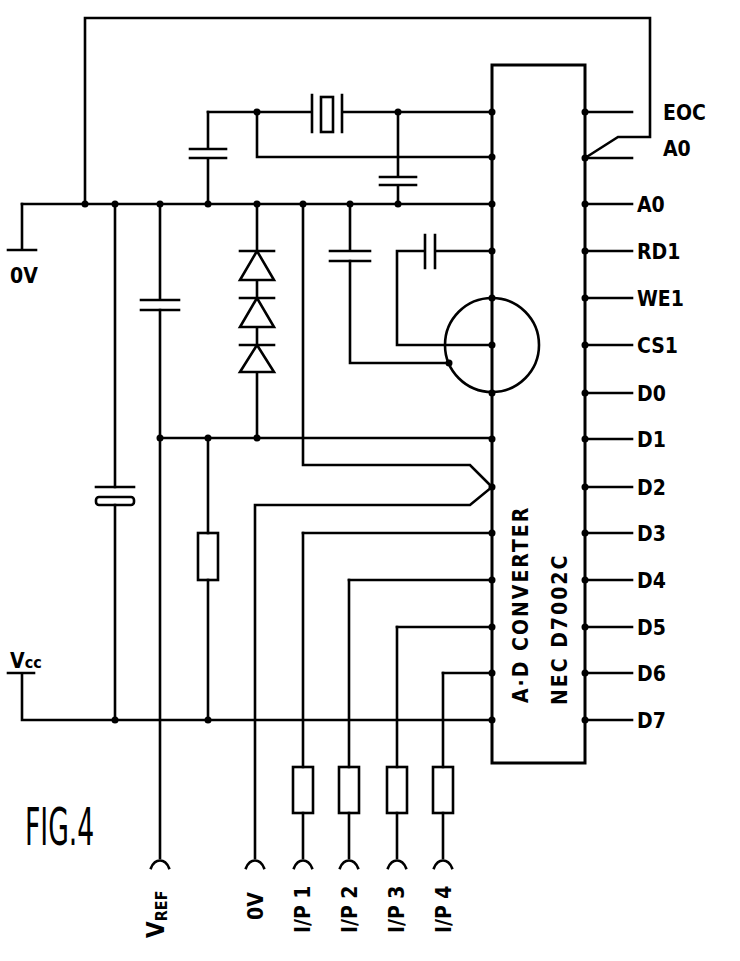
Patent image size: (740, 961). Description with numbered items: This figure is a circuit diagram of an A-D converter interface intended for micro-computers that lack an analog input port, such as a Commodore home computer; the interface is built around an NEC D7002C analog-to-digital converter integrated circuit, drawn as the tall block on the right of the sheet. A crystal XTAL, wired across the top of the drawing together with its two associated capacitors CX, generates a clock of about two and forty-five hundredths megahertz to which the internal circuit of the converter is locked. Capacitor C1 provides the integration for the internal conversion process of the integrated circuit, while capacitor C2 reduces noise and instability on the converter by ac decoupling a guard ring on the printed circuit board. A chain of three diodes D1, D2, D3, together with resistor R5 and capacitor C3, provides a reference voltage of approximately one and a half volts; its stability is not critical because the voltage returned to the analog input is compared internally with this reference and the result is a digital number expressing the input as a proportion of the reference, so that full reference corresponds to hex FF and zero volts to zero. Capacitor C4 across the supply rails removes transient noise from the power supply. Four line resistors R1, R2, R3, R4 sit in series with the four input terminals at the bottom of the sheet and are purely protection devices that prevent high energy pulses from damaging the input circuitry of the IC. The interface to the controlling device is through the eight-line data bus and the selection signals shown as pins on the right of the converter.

The crystal XTAL is at (350, 99).
The crystal load capacitors CX is at (301, 158).
The capacitor C1 is at (444, 290).
The capacitor C2 is at (357, 232).
The capacitor C3 is at (152, 257).
The capacitor C4 is at (98, 501).
The diode D1 is at (252, 271).
The diode D2 is at (248, 313).
The diode D3 is at (248, 362).
The line resistor R1 is at (433, 771).
The line resistor R2 is at (387, 771).
The line resistor R3 is at (339, 771).
The line resistor R4 is at (293, 771).
The resistor R5 is at (198, 538).